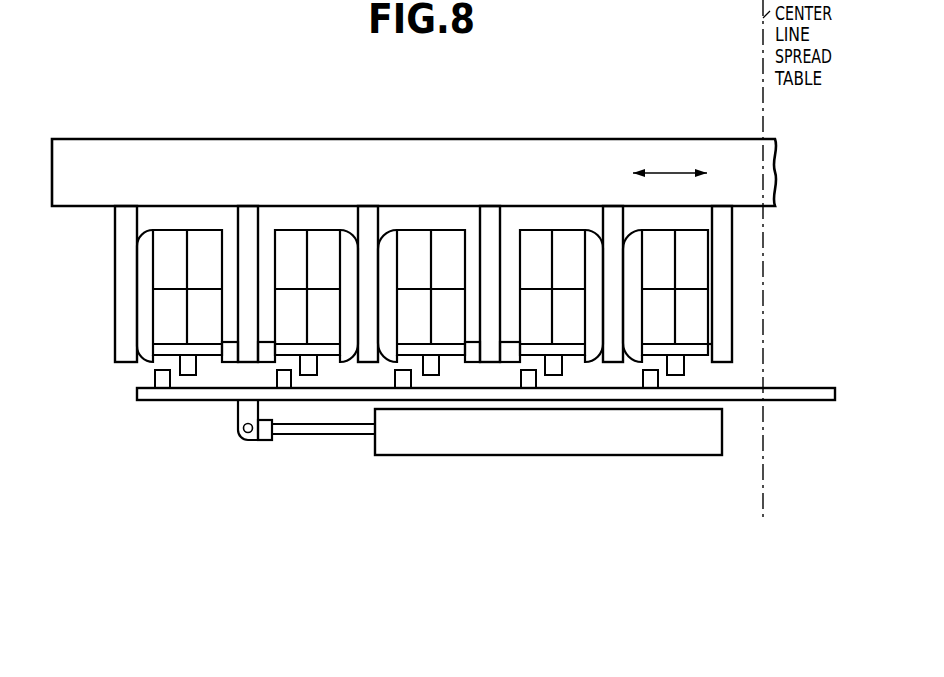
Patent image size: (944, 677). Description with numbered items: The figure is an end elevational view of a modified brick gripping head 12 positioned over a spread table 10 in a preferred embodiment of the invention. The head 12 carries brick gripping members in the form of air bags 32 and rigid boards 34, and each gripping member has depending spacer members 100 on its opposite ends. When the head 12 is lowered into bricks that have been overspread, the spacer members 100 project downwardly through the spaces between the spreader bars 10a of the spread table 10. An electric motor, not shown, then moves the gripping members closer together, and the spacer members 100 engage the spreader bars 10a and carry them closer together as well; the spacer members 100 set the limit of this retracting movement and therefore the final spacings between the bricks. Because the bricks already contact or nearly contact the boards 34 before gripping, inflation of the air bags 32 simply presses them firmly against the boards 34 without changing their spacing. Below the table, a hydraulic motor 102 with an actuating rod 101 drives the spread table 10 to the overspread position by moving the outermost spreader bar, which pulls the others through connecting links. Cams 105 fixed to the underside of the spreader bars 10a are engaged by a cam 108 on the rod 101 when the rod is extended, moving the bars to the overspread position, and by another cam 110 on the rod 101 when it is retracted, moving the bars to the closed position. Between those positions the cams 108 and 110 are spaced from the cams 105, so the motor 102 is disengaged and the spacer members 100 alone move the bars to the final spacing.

The brick gripping head 12 is at (353, 150).
The air bag 32 is at (612, 220).
The board 34 is at (727, 275).
The spread table 10 is at (722, 352).
The spacer member 100 is at (229, 370).
The cam 105 is at (190, 376).
The spreader bar 10a is at (417, 363).
The cam 110 is at (155, 375).
The actuating rod 101 is at (466, 394).
The cam 108 is at (284, 389).
The hydraulic motor 102 is at (693, 442).